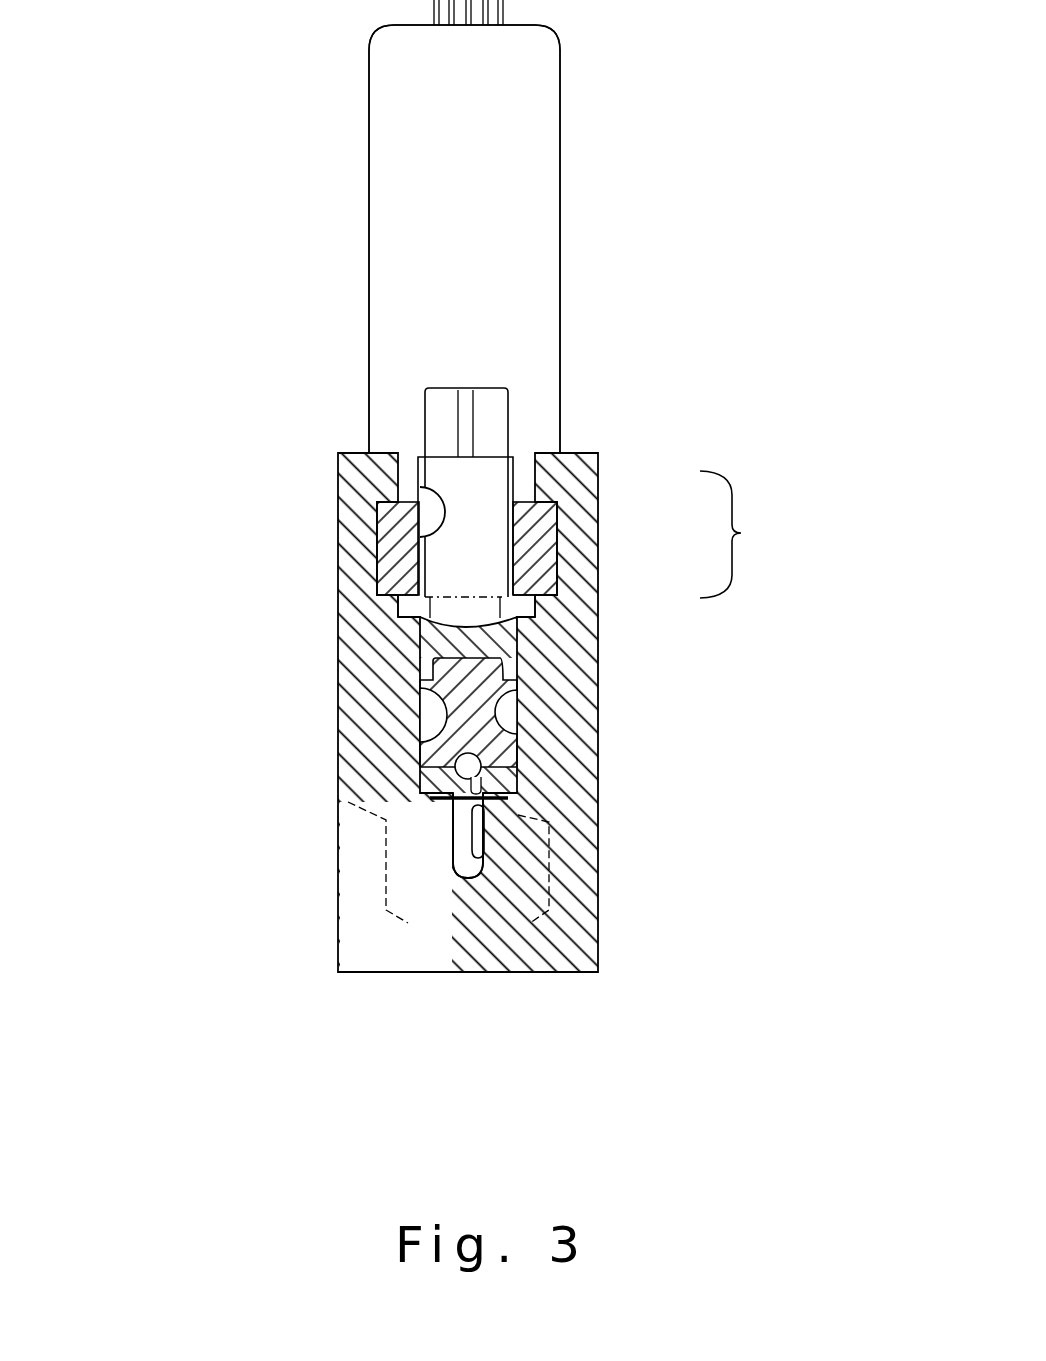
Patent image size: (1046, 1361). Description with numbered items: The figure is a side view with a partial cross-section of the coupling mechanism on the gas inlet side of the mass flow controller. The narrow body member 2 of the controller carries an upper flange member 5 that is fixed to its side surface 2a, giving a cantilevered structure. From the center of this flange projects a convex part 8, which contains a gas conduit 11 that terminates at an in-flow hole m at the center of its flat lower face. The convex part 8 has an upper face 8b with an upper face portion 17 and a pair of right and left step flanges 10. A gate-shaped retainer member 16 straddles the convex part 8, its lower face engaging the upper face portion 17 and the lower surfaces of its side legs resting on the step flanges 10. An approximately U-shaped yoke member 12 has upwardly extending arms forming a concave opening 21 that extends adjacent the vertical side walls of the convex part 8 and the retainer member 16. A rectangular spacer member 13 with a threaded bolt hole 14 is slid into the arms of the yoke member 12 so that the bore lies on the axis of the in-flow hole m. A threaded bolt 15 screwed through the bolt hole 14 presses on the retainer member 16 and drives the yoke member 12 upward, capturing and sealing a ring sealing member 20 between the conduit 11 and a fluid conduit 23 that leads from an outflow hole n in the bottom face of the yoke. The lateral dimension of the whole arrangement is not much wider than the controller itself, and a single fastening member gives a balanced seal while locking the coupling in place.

The body member 2 is at (563, 177).
The side surface 2a is at (398, 200).
The upper flange member 5 is at (505, 710).
The convex part 8 is at (490, 737).
The upper face 8b is at (517, 640).
The step flanges 10 is at (517, 658).
The conduit 11 is at (465, 765).
The yoke member 12 is at (597, 872).
The spacer member 13 is at (377, 527).
The bolt hole 14 is at (420, 487).
The threaded bolt 15 is at (512, 408).
The retainer member 16 is at (418, 640).
The upper face portion 17 is at (743, 534).
The ring sealing member 20 is at (453, 797).
The concave opening 21 is at (528, 474).
The fluid conduit 23 is at (453, 860).
The in-flow hole m is at (483, 766).
The outflow hole n is at (485, 850).